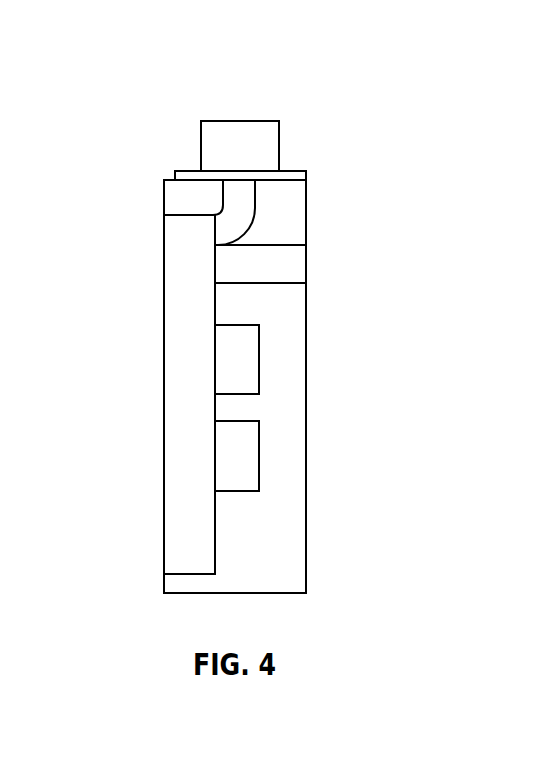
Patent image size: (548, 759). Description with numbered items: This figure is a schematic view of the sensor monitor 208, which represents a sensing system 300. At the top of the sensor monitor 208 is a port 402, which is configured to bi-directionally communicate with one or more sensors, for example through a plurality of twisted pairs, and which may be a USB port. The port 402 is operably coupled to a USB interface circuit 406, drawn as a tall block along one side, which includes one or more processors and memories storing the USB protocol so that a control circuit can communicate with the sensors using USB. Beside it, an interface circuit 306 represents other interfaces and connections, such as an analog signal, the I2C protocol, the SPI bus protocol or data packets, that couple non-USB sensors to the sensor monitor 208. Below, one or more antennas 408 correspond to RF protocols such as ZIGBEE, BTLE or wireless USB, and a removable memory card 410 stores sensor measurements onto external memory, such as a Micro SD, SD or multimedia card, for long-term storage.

The sensor monitor 208 is at (128, 55).
The sensing system 300 is at (358, 70).
The port 402 is at (240, 98).
The interface circuit 306 is at (306, 268).
The USB interface circuit 406 is at (164, 393).
The antennas 408 is at (259, 360).
The removable memory card 410 is at (259, 456).